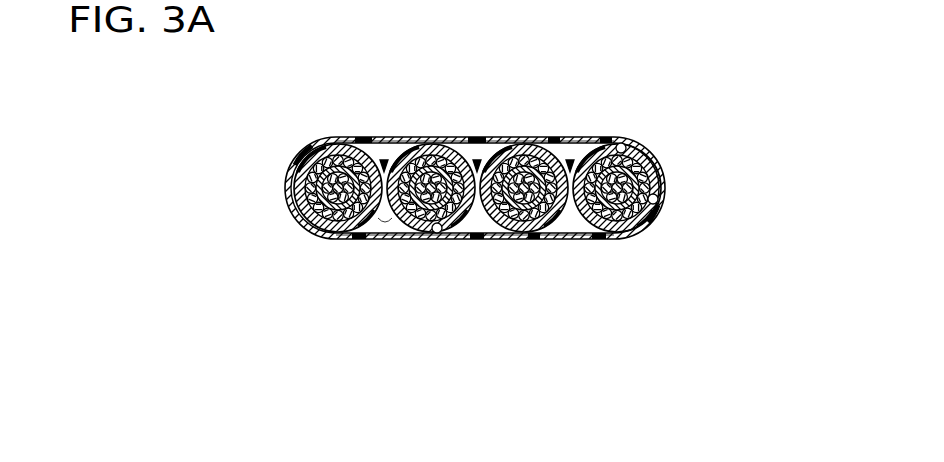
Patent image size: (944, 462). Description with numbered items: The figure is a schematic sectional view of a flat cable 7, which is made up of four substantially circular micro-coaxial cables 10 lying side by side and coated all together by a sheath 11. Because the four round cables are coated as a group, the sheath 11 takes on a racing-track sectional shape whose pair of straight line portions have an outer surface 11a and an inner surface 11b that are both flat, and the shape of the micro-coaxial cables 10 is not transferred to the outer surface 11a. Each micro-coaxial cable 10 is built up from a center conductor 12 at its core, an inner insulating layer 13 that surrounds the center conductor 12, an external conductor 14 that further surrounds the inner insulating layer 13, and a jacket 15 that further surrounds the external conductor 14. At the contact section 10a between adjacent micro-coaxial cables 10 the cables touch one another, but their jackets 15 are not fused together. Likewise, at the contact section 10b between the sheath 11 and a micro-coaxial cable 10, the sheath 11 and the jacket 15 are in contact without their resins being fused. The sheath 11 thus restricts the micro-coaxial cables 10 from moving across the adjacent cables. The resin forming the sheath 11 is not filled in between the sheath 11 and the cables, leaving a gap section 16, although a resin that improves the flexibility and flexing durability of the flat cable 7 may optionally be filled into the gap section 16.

The flat cable 7 is at (485, 204).
The micro-coaxial cable 10 is at (462, 219).
The contact section 10a is at (381, 160).
The contact section 10b is at (622, 143).
The sheath 11 is at (347, 140).
The outer surface 11a is at (433, 147).
The inner surface 11b is at (500, 150).
The center conductor 12 is at (343, 203).
The inner insulating layer 13 is at (317, 200).
The external conductor 14 is at (308, 188).
The jacket 15 is at (303, 168).
The gap section 16 is at (385, 225).